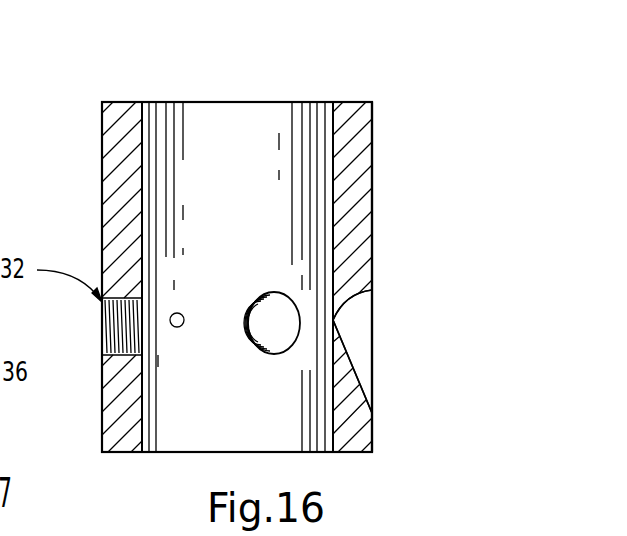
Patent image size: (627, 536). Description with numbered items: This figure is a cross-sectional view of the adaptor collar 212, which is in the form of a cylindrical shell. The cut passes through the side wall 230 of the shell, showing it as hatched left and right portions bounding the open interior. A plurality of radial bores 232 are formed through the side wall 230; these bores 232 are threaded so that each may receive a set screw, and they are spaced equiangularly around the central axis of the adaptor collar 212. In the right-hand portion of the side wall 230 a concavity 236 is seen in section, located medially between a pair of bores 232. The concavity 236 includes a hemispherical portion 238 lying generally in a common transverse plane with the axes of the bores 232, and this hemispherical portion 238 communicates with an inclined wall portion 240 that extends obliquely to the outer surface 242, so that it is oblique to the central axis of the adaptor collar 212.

The adaptor collar 212 is at (348, 78).
The side wall 230 is at (348, 208).
The radial bore 232 is at (283, 325).
The concavity 236 is at (348, 333).
The hemispherical portion 238 is at (337, 313).
The inclined wall portion 240 is at (357, 378).
The outer surface 242 is at (372, 160).